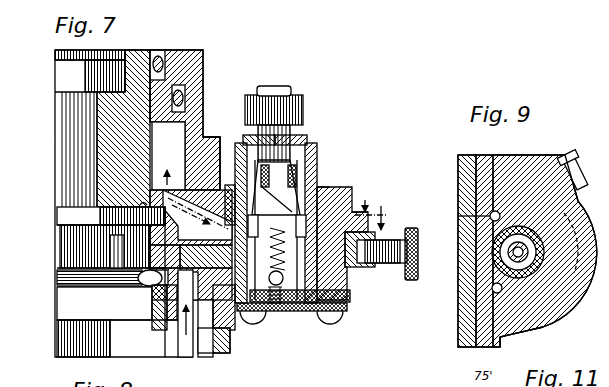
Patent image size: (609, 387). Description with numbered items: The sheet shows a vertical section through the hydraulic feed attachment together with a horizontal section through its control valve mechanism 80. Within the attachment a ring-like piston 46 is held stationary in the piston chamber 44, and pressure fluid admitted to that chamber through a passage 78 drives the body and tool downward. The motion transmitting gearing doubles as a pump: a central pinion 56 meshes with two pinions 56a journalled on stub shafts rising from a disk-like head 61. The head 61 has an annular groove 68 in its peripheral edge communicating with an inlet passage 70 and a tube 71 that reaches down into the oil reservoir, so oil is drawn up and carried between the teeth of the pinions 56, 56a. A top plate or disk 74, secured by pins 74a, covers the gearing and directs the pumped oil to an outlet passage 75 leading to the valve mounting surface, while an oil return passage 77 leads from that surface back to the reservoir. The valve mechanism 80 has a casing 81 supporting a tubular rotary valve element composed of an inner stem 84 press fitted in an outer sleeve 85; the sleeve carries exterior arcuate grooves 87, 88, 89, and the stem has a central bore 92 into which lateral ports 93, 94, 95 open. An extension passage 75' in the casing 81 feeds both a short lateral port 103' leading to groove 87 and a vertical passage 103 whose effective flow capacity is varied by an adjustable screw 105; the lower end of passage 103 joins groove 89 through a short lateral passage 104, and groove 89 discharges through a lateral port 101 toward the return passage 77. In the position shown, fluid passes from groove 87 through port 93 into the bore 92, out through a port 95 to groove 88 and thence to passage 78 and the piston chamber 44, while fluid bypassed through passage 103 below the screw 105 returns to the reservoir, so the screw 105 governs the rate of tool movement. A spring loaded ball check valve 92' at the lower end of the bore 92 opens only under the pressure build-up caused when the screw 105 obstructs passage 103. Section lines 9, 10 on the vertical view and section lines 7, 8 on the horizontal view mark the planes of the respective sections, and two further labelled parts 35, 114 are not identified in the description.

In FIG. 7, the ring-like piston 46 is at (205, 63).
In FIG. 7, the piston chamber 44 is at (168, 156).
In FIG. 7, the outlet passage 75 is at (215, 150).
In FIG. 9, the outlet passage 75 is at (466, 199).
In FIG. 9, the extension passage 75' is at (479, 239).
In FIG. 7, the piston chamber passage 78 is at (191, 218).
In FIG. 7, the body portion 35 is at (191, 256).
In FIG. 7, the arcuate groove 88 is at (232, 262).
In FIG. 7, the top plate or disk 74 is at (57, 216).
In FIG. 7, the pins 74a is at (140, 207).
In FIG. 7, the pinion 56 is at (70, 232).
In FIG. 7, the pinions 56a is at (113, 245).
In FIG. 7, the annular groove 68 is at (128, 283).
In FIG. 7, the disk-like head 61 is at (85, 290).
In FIG. 7, the inlet passage 70 is at (176, 290).
In FIG. 7, the tube 71 is at (180, 347).
In FIG. 7, the oil return passage 77 is at (208, 358).
In FIG. 7, the port 93 is at (322, 160).
In FIG. 9, the port 93 is at (580, 214).
In FIG. 7, the ports 95 is at (312, 184).
In FIG. 7, the lateral port 103' is at (359, 164).
In FIG. 9, the lateral port 103' is at (464, 249).
In FIG. 7, the knurled knob 114 is at (300, 111).
In FIG. 7, the inner stem 84 is at (276, 137).
In FIG. 7, the arcuate groove 87 is at (277, 198).
In FIG. 7, the outer sleeve 85 is at (292, 236).
In FIG. 7, the valve mechanism 80 is at (346, 186).
In FIG. 7, the casing 81 is at (356, 199).
In FIG. 7, the lateral passage 104 is at (347, 284).
In FIG. 7, the section line 10— 10 is at (381, 234).
In FIG. 9, the section line 10— 10 is at (524, 252).
In FIG. 7, the section line 9— 9 is at (371, 206).
In FIG. 7, the adjustable screw 105 is at (412, 228).
In FIG. 9, the adjustable screw 105 is at (586, 163).
In FIG. 7, the vertical passage 103 is at (322, 302).
In FIG. 9, the vertical passage 103 is at (527, 239).
In FIG. 7, the spring loaded ball check valve 92' is at (292, 332).
In FIG. 7, the arcuate groove 89 is at (252, 320).
In FIG. 9, the port 94 is at (491, 288).
In FIG. 9, the lateral port 101 is at (472, 312).
In FIG. 9, the central bore 92 is at (550, 252).
In FIG. 9, the section line 8— 8 is at (528, 246).
In FIG. 9, the section line 7— 7 is at (554, 314).